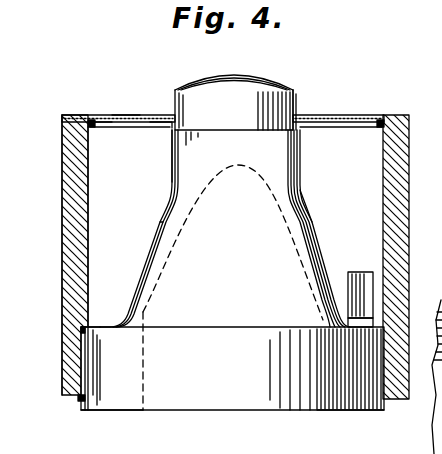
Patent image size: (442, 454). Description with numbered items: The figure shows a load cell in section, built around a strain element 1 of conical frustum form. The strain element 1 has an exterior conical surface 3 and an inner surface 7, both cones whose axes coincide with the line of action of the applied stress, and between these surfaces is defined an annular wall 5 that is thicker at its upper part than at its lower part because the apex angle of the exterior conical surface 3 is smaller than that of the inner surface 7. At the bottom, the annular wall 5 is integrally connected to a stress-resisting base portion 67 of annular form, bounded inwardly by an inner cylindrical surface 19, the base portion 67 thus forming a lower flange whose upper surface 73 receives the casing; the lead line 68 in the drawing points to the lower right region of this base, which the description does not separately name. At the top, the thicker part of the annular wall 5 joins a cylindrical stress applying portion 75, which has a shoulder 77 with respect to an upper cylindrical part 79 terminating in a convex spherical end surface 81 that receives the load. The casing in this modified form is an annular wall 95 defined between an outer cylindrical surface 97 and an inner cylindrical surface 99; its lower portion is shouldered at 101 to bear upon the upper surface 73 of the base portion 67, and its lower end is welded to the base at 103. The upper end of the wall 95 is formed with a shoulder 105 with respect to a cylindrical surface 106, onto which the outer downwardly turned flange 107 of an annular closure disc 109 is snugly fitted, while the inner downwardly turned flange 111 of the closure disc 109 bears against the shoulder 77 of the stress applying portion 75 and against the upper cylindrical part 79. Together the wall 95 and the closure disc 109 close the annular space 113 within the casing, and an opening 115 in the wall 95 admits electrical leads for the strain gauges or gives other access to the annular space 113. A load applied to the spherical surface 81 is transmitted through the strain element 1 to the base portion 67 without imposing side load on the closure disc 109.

The strain element 1 is at (318, 220).
The exterior conical surface 3 is at (225, 228).
The annular wall 5 is at (152, 232).
The inner surface 7 is at (193, 220).
The inner cylindrical surface 19 is at (146, 364).
The base portion 67 is at (103, 401).
The base plate bottom right edge 68 is at (350, 410).
The upper surface 73 is at (216, 326).
The stress applying portion 75 is at (185, 143).
The shoulder 77 is at (229, 123).
The upper cylindrical part 79 is at (298, 100).
The convex spherical end surface 81 is at (235, 78).
The annular wall 95 is at (62, 240).
The cylindrical surface 97 is at (62, 165).
The inner cylindrical surface 99 is at (90, 180).
The shoulder 101 is at (99, 325).
The weld 103 is at (78, 400).
The shoulder 105 is at (380, 118).
The cylindrical surface 106 is at (62, 117).
The outer downwardly turned flange 107 is at (98, 114).
The annular closure disc 109 is at (125, 114).
The inner downwardly turned flange 111 is at (158, 118).
The annular space 113 is at (370, 153).
The opening 115 is at (367, 272).